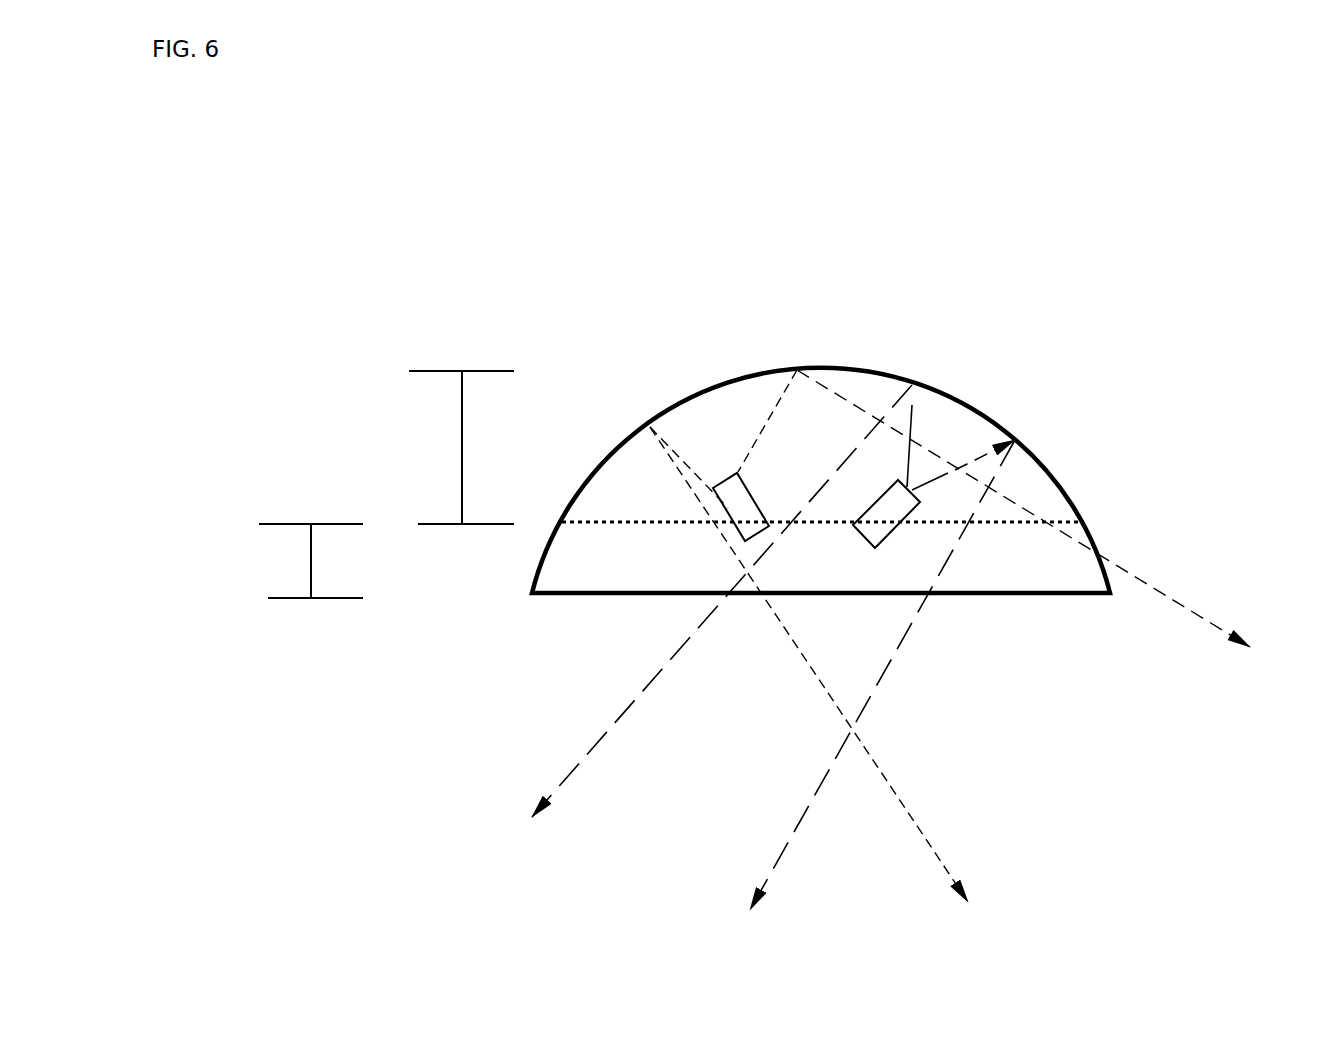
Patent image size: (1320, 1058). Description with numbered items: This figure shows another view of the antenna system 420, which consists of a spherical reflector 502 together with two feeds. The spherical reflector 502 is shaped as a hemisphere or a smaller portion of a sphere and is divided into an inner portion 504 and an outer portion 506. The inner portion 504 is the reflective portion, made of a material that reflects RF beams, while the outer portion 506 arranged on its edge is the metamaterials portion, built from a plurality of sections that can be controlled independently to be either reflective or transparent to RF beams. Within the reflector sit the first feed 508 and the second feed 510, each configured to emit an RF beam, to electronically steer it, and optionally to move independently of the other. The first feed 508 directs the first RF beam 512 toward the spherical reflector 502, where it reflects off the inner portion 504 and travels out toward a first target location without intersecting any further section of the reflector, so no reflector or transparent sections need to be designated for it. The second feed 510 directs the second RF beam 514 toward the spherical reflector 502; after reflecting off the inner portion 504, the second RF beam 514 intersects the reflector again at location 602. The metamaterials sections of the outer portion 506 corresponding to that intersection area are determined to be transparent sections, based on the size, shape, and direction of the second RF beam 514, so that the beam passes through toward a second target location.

The antenna system 420 is at (241, 108).
The spherical reflector 502 is at (972, 407).
The inner portion 504 is at (457, 447).
The outer portion 506 is at (305, 561).
The first feed 508 is at (883, 535).
The second feed 510 is at (730, 509).
The first RF beam 512 is at (773, 647).
The second RF beam 514 is at (857, 636).
The location 602 is at (1103, 555).